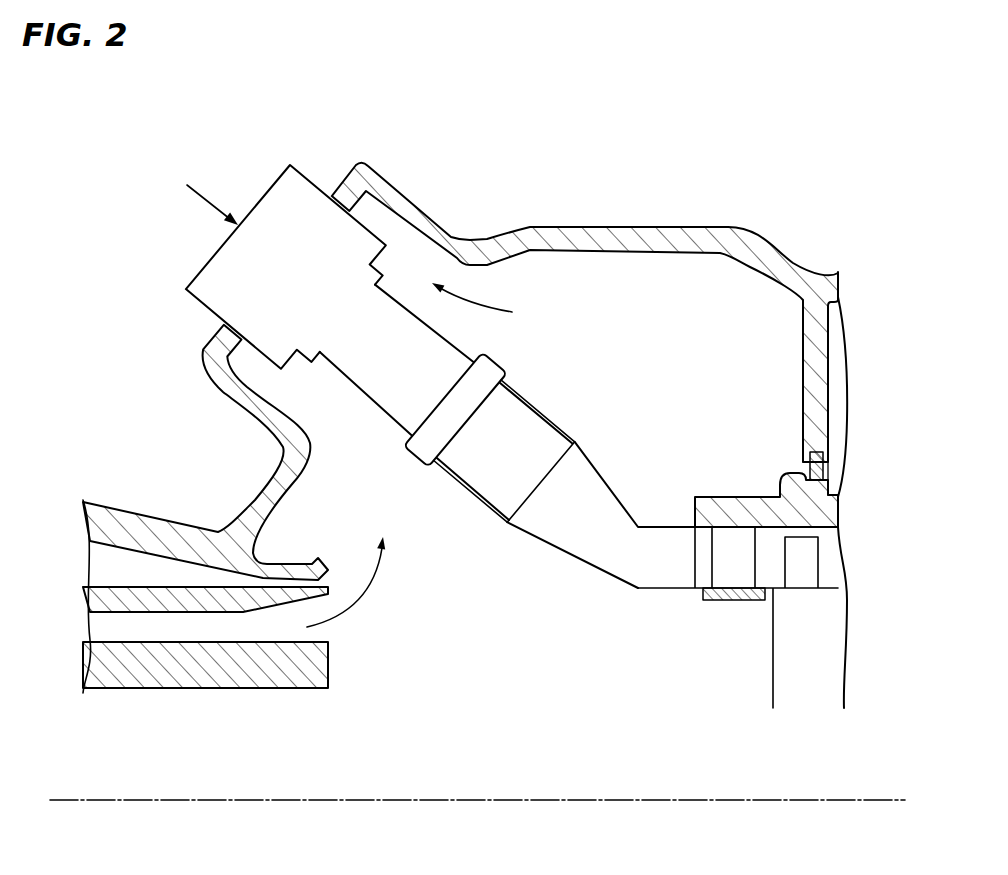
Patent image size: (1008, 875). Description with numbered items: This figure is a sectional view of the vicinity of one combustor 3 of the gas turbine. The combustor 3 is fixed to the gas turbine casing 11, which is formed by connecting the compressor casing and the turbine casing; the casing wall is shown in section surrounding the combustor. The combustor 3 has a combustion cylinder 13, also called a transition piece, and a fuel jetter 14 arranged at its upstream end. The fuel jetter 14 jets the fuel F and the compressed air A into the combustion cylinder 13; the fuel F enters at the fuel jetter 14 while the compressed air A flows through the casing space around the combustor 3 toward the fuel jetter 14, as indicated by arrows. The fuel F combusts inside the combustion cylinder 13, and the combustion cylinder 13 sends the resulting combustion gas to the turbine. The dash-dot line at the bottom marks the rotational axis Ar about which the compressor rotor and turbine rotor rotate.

The combustor 3 is at (467, 520).
The gas turbine casing 11 is at (618, 237).
The combustion cylinder 13 is at (543, 442).
The fuel jetter 14 is at (285, 212).
The fuel F is at (201, 192).
The compressed air A is at (423, 462).
The rotational axis Ar is at (852, 797).